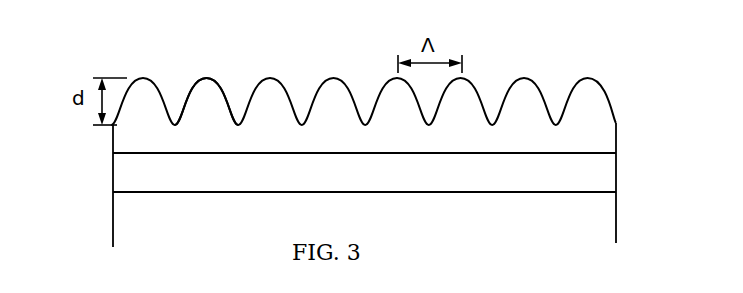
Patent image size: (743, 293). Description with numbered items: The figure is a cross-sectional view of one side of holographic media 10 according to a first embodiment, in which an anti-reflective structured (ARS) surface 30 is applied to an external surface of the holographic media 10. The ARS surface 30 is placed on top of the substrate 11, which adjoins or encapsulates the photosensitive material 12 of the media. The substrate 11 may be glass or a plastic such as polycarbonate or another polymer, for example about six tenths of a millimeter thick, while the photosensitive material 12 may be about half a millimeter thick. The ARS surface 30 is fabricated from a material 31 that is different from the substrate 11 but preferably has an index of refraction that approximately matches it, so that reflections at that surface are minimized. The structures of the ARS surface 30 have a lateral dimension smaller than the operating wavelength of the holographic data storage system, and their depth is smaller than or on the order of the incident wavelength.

The holographic media 10 is at (616, 176).
The substrate 11 is at (130, 170).
The photosensitive material 12 is at (137, 218).
The ARS surface 30 is at (268, 78).
The material 31 is at (205, 107).